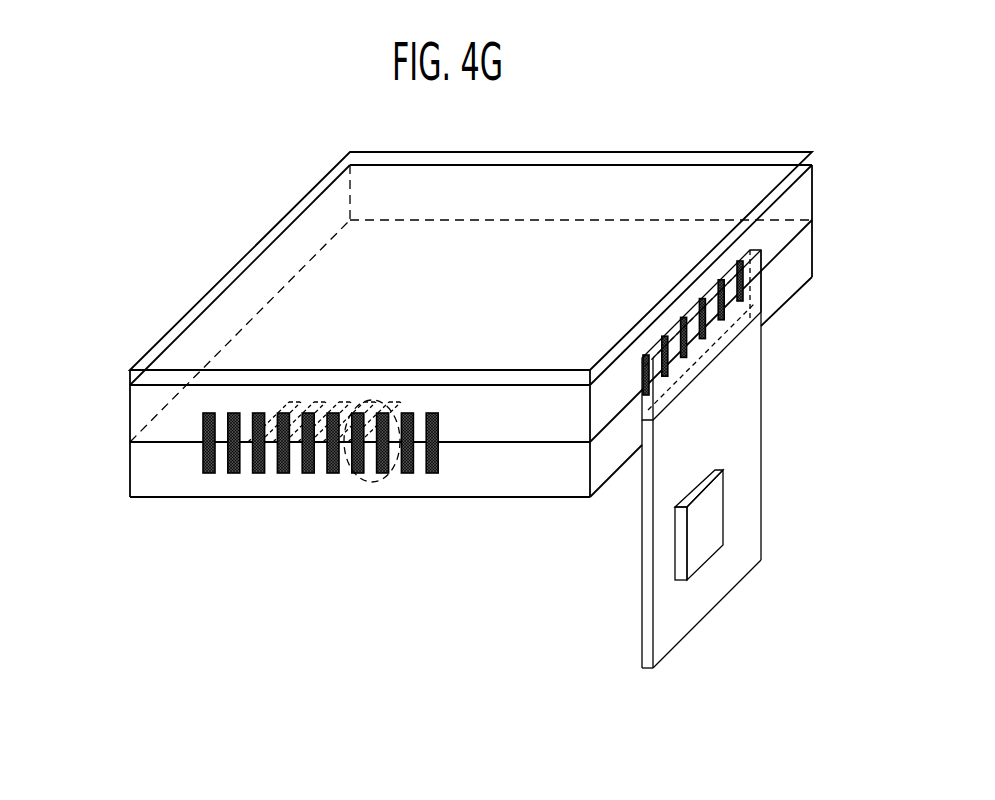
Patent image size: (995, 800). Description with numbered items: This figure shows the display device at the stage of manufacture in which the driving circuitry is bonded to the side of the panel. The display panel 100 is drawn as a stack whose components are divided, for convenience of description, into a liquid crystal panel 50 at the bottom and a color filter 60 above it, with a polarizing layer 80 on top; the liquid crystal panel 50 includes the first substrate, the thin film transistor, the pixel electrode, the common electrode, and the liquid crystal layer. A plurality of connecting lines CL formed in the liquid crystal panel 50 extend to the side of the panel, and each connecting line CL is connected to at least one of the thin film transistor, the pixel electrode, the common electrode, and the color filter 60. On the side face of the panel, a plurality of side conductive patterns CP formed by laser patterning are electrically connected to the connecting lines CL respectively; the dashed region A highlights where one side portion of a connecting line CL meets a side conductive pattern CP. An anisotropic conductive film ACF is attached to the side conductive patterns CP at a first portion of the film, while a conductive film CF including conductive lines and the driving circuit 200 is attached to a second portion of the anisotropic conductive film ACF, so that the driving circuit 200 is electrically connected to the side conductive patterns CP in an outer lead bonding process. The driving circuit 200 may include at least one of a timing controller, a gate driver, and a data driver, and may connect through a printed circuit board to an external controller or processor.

The polarizing layer 80 is at (128, 381).
The color filter 60 is at (128, 410).
The liquid crystal panel 50 is at (128, 473).
The display panel 100 is at (69, 403).
The connecting lines CL is at (290, 404).
The side conductive patterns CP is at (283, 475).
The region A is at (373, 483).
The anisotropic conductive film ACF is at (748, 295).
The conductive film CF is at (762, 427).
The driving circuit 200 is at (708, 520).